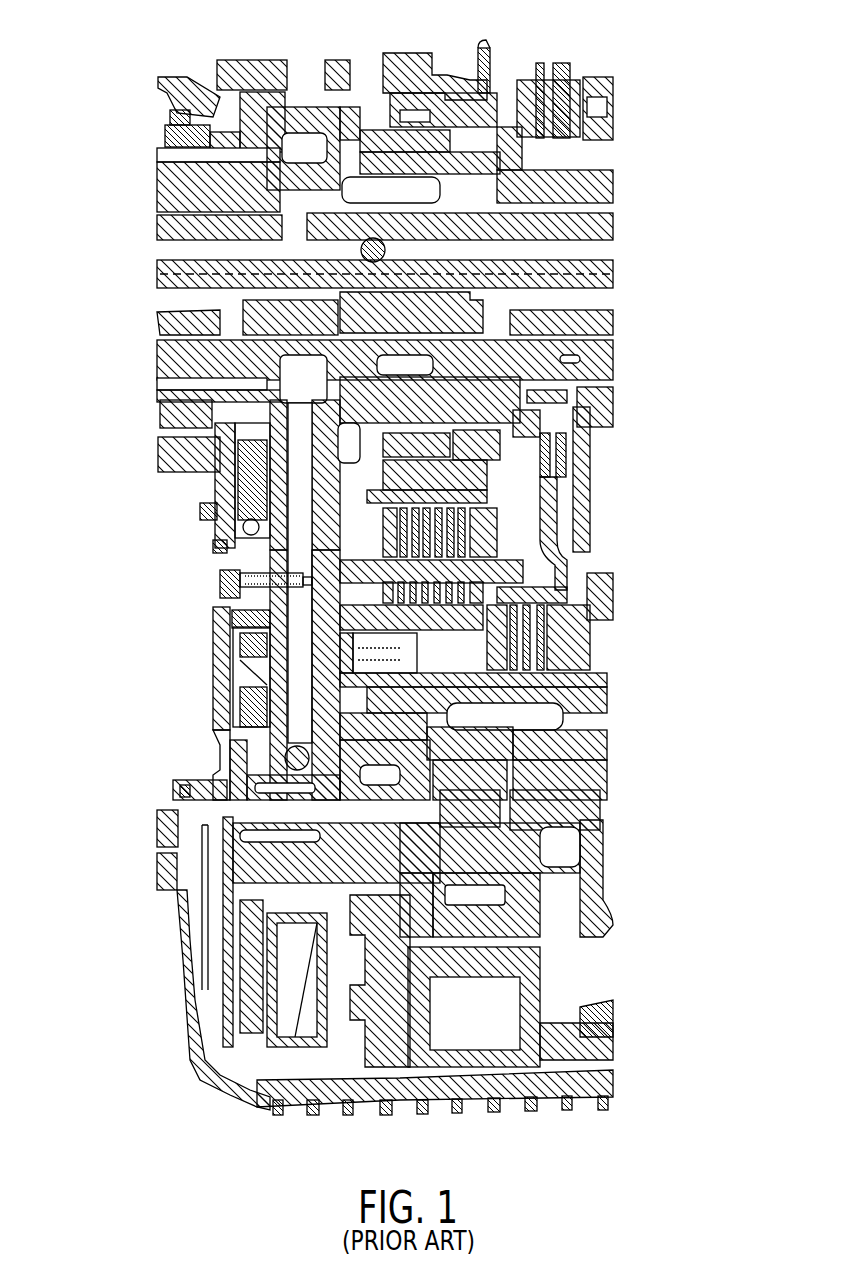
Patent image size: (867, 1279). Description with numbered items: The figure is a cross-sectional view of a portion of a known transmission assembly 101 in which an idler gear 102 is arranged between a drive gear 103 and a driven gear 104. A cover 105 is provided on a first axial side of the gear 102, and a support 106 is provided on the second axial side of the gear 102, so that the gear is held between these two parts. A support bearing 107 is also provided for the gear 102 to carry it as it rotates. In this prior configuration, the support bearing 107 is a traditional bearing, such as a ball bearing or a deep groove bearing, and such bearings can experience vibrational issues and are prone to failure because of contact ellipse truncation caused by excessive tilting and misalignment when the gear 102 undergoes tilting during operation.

The transmission assembly 101 is at (664, 63).
The gear 102 is at (210, 492).
The drive gear 103 is at (225, 102).
The driven gear 104 is at (245, 713).
The cover 105 is at (215, 668).
The support 106 is at (218, 573).
The support bearing 107 is at (222, 638).